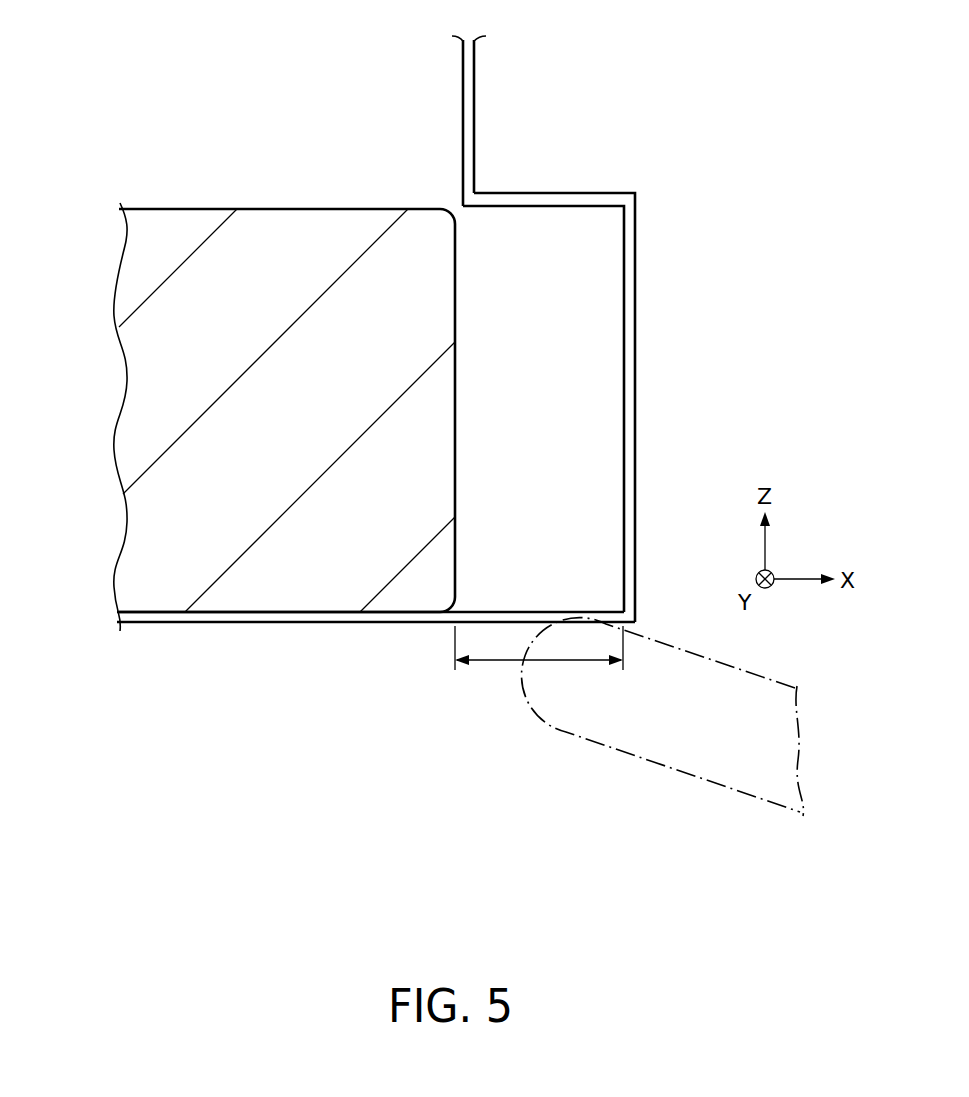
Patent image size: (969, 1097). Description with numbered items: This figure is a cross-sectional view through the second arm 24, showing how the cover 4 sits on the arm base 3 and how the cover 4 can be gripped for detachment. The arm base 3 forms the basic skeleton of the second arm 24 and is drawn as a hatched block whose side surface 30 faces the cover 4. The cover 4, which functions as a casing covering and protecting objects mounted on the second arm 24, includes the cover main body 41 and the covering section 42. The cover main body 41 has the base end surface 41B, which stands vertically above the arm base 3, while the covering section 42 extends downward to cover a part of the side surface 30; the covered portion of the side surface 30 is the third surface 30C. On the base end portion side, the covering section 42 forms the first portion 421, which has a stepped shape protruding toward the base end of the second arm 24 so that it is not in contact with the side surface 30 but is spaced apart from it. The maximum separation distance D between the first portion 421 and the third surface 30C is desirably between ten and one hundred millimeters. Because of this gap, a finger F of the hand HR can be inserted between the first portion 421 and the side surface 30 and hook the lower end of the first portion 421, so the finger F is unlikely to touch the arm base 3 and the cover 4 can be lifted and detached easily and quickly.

The arm base 3 is at (138, 352).
The side surface 30 is at (357, 410).
The third surface 30C is at (420, 252).
The cover 4 is at (474, 137).
The second arm 24 is at (474, 58).
The cover main body 41 is at (474, 100).
The base end surface 41B is at (474, 170).
The covering section 42 is at (623, 407).
The first portion 421 is at (634, 403).
The maximum separation distance D is at (539, 659).
The finger F is at (559, 703).
The hand HR is at (737, 798).